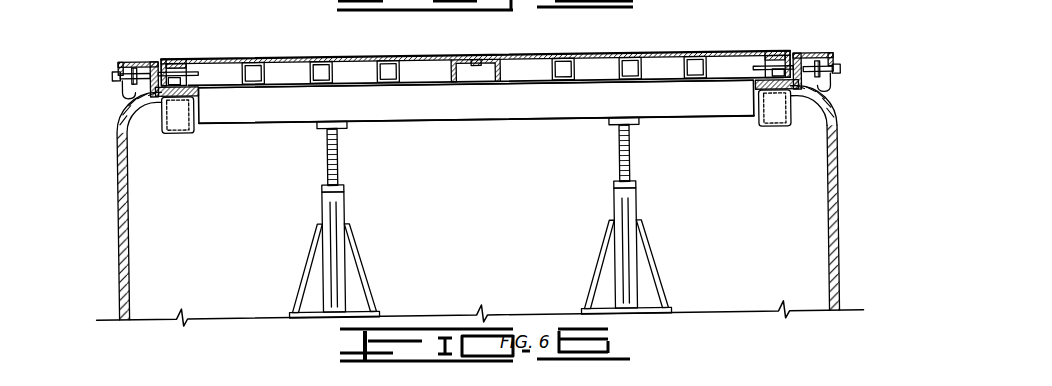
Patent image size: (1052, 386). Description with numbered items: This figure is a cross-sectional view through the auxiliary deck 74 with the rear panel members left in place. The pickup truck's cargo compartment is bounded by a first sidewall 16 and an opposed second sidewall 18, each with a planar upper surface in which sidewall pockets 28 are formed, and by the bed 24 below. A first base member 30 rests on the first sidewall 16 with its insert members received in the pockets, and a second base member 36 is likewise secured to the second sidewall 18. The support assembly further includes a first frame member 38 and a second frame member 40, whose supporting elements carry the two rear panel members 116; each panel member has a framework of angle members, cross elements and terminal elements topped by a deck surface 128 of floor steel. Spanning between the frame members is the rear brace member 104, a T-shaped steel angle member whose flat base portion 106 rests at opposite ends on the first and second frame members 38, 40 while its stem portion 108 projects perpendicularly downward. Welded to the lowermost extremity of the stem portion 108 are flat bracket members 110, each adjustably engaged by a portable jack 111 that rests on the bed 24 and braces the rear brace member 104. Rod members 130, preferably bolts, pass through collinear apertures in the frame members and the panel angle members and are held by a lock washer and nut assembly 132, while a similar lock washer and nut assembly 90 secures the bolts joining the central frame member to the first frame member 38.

The first sidewall 16 is at (838, 169).
The second sidewall 18 is at (118, 203).
The bed 24 is at (432, 315).
The sidewall pocket 28 is at (780, 126).
The first base member 30 is at (760, 87).
The second base member 36 is at (198, 92).
The first frame member 38 is at (821, 48).
The second frame member 40 is at (127, 51).
The auxiliary deck 74 is at (526, 53).
The lock washer and nut assembly 90 is at (817, 97).
The rear brace member 104 is at (465, 109).
The base portion 106 is at (192, 88).
The stem portion 108 is at (268, 113).
The bracket member 110 is at (350, 126).
The portable jack 111 is at (346, 203).
The rear panel member 116 is at (287, 57).
The deck surface 128 is at (350, 57).
The rod member 130 is at (114, 78).
The lock washer and nut assembly 132 is at (126, 90).